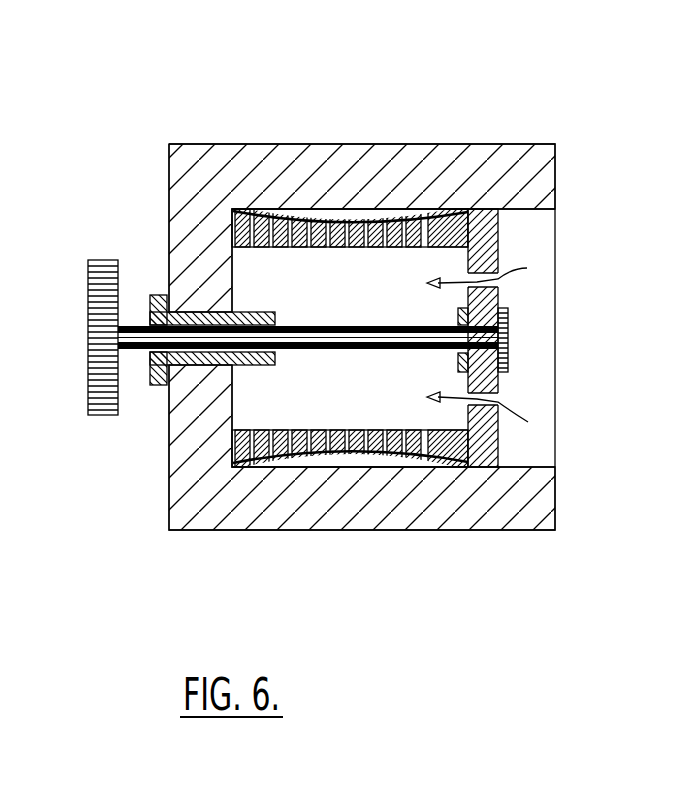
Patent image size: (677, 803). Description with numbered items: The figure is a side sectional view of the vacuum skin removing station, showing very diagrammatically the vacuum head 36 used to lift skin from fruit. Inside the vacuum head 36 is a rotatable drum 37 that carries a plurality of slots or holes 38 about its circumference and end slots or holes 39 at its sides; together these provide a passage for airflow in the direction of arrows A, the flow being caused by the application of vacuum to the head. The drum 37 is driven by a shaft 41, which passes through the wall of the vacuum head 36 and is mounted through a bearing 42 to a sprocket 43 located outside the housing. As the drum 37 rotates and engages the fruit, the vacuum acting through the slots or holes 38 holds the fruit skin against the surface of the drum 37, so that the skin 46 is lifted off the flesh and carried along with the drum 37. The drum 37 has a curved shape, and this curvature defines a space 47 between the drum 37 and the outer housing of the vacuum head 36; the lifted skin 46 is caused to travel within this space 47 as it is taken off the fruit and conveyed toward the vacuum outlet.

The vacuum head 36 is at (517, 144).
The rotatable drum 37 is at (477, 222).
The slots or holes 38 is at (378, 220).
The end slots or holes 39 is at (500, 282).
The shaft 41 is at (135, 342).
The bearing 42 is at (200, 312).
The sprocket 43 is at (108, 260).
The skin 46 is at (314, 212).
The space 47 is at (387, 222).
The arrows A is at (488, 347).